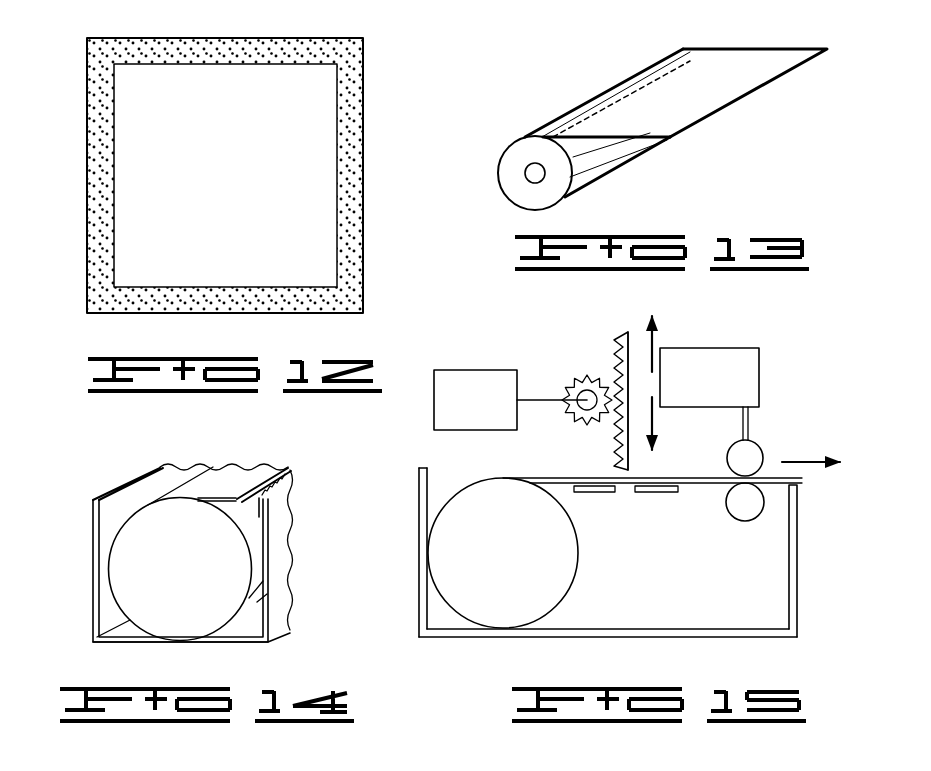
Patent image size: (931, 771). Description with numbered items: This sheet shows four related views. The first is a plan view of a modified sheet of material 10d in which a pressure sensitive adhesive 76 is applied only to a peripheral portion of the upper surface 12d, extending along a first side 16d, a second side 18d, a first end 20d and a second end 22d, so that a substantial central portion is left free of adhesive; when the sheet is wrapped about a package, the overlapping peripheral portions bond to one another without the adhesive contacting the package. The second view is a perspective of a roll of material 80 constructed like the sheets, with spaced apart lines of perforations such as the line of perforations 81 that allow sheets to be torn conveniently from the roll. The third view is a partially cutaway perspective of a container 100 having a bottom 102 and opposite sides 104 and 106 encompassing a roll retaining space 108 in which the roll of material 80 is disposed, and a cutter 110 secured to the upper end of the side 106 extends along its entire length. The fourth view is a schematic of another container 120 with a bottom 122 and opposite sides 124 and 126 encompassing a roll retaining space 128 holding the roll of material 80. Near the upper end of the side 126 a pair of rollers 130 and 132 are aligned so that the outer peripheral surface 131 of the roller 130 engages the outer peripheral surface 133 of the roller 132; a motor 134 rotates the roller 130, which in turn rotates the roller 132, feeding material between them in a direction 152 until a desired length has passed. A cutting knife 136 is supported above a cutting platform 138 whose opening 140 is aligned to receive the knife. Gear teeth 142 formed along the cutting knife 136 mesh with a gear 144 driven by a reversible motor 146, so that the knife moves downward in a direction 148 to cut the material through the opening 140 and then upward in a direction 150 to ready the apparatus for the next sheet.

In FIG. 12, the sheet of material 10d is at (368, 86).
In FIG. 12, the upper surface 12d is at (257, 78).
In FIG. 12, the first side 16d is at (88, 150).
In FIG. 12, the second side 18d is at (363, 58).
In FIG. 12, the first end 20d is at (143, 37).
In FIG. 12, the second end 22d is at (105, 315).
In FIG. 12, the pressure sensitive adhesive 76 is at (355, 137).
In FIG. 13, the roll of material 80 is at (512, 133).
In FIG. 14, the roll of material 80 is at (143, 500).
In FIG. 15, the roll of material 80 is at (488, 593).
In FIG. 13, the line of perforations 81 is at (686, 63).
In FIG. 14, the container 100 is at (182, 555).
In FIG. 14, the bottom 102 is at (212, 643).
In FIG. 14, the side 104 is at (93, 602).
In FIG. 14, the side 106 is at (263, 563).
In FIG. 14, the roll retaining space 108 is at (160, 485).
In FIG. 14, the cutter 110 is at (273, 478).
In FIG. 15, the container 120 is at (598, 570).
In FIG. 15, the bottom 122 is at (557, 638).
In FIG. 15, the side 124 is at (419, 602).
In FIG. 15, the side 126 is at (797, 611).
In FIG. 15, the roll retaining space 128 is at (453, 467).
In FIG. 15, the roller 130 is at (748, 447).
In FIG. 15, the outer peripheral surface 131 is at (769, 446).
In FIG. 15, the roller 132 is at (747, 513).
In FIG. 15, the outer peripheral surface 133 is at (770, 516).
In FIG. 15, the motor 134 is at (748, 348).
In FIG. 15, the cutting knife 136 is at (623, 470).
In FIG. 15, the cutting platform 138 is at (602, 493).
In FIG. 15, the opening 140 is at (618, 491).
In FIG. 15, the gear teeth 142 is at (613, 345).
In FIG. 15, the gear 144 is at (577, 368).
In FIG. 15, the motor 146 is at (477, 375).
In FIG. 15, the direction 148 is at (651, 426).
In FIG. 15, the direction 150 is at (654, 340).
In FIG. 15, the direction 152 is at (812, 466).